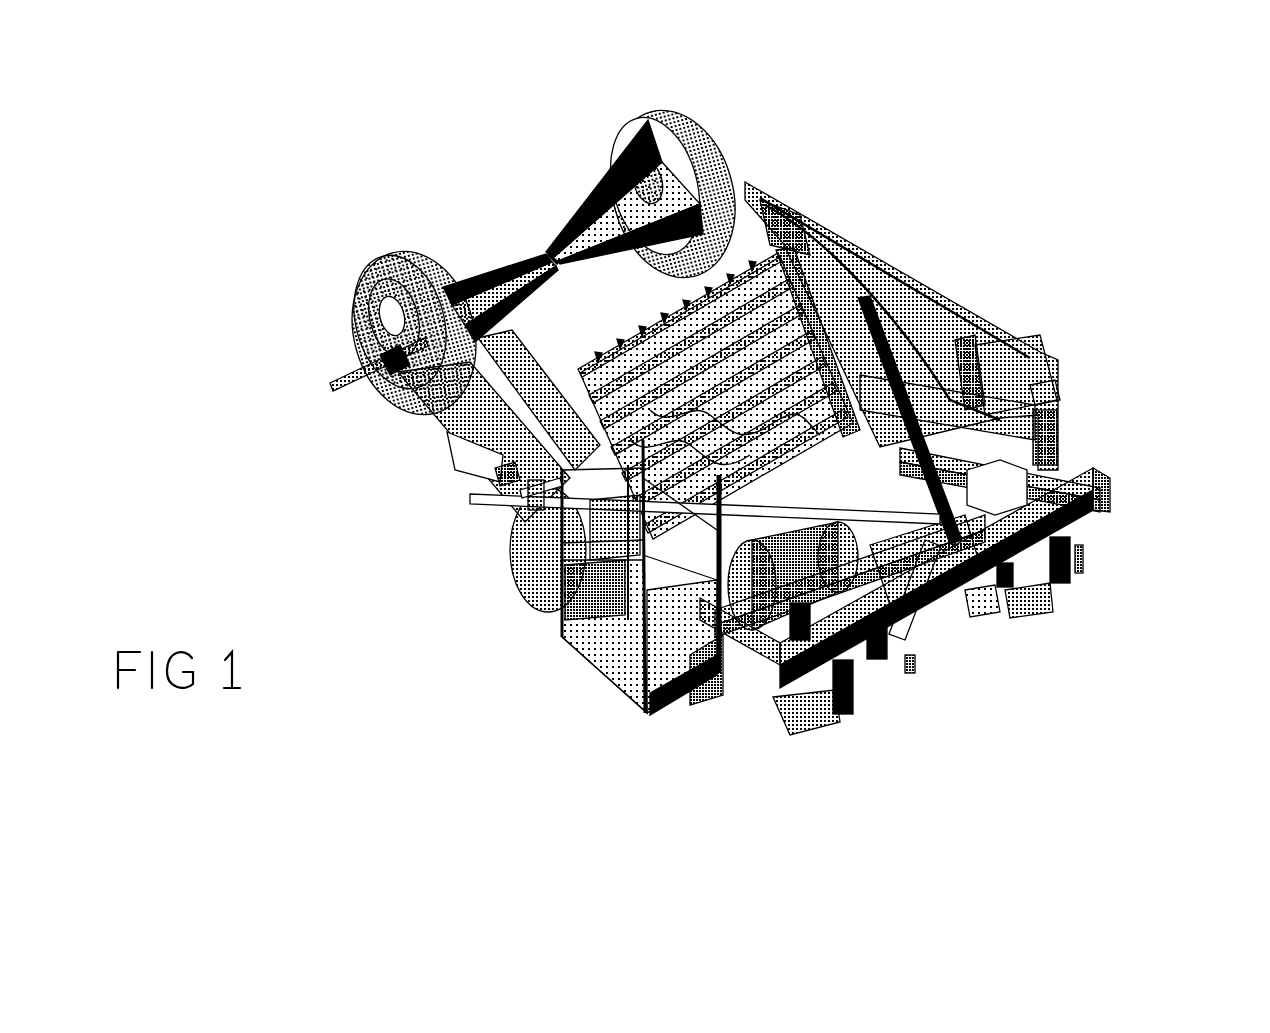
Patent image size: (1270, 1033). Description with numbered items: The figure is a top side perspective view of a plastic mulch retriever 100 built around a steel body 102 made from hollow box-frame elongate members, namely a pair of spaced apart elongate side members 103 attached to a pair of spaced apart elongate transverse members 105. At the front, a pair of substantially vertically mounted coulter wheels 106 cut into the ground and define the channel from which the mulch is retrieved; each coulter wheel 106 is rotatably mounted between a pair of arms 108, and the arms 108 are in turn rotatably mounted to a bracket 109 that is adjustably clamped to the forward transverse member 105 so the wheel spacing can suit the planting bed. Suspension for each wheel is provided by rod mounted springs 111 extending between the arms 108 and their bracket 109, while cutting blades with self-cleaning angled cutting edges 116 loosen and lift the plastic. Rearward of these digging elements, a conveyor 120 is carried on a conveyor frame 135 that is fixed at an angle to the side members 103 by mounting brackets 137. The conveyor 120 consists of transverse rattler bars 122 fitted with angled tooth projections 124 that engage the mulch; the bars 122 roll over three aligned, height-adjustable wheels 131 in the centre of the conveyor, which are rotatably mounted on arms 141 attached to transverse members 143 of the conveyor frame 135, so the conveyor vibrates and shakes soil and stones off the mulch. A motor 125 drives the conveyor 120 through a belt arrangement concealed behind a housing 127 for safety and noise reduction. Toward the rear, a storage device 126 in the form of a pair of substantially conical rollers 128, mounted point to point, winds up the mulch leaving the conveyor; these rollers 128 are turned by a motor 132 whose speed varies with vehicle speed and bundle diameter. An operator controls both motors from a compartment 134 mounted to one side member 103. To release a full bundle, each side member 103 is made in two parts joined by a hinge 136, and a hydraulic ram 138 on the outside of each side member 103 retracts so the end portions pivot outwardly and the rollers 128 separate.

The plastic mulch retriever 100 is at (1027, 147).
The body 102 is at (1070, 470).
The elongate side members 103 is at (1060, 472).
The elongate transverse members 105 is at (985, 405).
The coulter wheels 106 is at (1047, 610).
The arms 108 is at (1077, 573).
The bracket 109 is at (1077, 540).
The rod mounted springs 111 is at (966, 584).
The angled cutting edges 116 is at (983, 607).
The conveyor 120 is at (748, 196).
The transverse bars 122 is at (776, 375).
The projections 124 is at (607, 352).
The motor 125 is at (1040, 398).
The storage device 126 is at (483, 180).
The housing 127 is at (912, 280).
The rollers 128 is at (597, 205).
The wheels 131 is at (843, 295).
The motor 132 is at (372, 376).
The compartment 134 is at (593, 680).
The conveyor frame 135 is at (540, 493).
The hinge 136 is at (527, 507).
The mounting brackets 137 is at (480, 440).
The hydraulic ram 138 is at (500, 473).
The arms 141 is at (582, 362).
The transverse members 143 is at (783, 240).